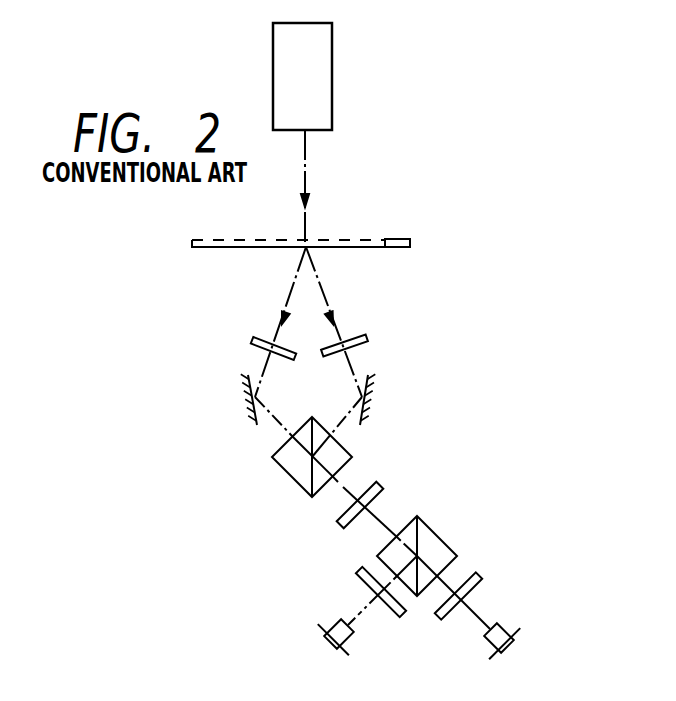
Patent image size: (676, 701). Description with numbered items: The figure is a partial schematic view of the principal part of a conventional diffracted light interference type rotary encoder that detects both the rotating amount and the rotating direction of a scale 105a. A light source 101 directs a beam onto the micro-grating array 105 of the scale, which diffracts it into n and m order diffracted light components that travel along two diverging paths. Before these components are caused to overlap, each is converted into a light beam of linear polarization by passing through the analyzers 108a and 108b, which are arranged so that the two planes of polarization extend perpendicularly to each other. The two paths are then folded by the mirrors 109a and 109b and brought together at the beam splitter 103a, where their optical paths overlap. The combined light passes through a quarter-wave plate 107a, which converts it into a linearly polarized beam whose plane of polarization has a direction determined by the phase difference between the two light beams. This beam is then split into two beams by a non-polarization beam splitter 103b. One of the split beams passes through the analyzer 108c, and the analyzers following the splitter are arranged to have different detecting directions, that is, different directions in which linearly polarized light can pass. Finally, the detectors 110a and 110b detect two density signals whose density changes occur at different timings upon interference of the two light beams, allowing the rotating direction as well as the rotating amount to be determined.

The light source (laser) 101 is at (332, 75).
The micro-grating array 105 is at (370, 238).
The scale 105a is at (410, 243).
The analyzer 108a is at (253, 340).
The analyzer 108b is at (365, 337).
The analyzer 108c is at (480, 575).
The mirror 109a is at (243, 391).
The mirror 109b is at (373, 391).
The beam splitter 103a is at (350, 453).
The non-polarization beam splitter 103b is at (440, 537).
The quarter-wave plate 107a is at (381, 485).
The detector 110a is at (508, 625).
The detector 110b is at (328, 628).